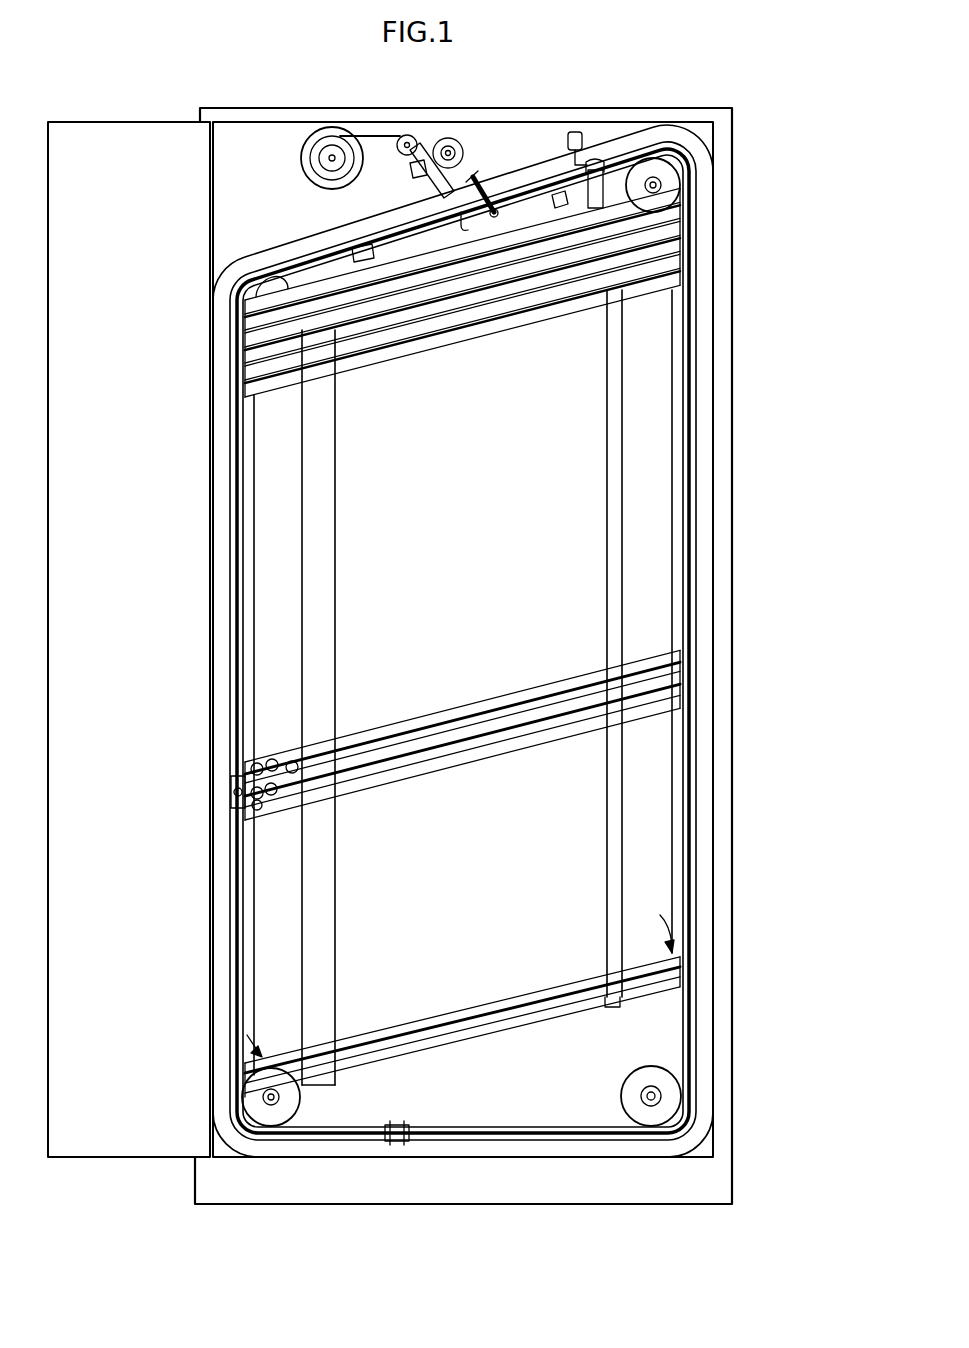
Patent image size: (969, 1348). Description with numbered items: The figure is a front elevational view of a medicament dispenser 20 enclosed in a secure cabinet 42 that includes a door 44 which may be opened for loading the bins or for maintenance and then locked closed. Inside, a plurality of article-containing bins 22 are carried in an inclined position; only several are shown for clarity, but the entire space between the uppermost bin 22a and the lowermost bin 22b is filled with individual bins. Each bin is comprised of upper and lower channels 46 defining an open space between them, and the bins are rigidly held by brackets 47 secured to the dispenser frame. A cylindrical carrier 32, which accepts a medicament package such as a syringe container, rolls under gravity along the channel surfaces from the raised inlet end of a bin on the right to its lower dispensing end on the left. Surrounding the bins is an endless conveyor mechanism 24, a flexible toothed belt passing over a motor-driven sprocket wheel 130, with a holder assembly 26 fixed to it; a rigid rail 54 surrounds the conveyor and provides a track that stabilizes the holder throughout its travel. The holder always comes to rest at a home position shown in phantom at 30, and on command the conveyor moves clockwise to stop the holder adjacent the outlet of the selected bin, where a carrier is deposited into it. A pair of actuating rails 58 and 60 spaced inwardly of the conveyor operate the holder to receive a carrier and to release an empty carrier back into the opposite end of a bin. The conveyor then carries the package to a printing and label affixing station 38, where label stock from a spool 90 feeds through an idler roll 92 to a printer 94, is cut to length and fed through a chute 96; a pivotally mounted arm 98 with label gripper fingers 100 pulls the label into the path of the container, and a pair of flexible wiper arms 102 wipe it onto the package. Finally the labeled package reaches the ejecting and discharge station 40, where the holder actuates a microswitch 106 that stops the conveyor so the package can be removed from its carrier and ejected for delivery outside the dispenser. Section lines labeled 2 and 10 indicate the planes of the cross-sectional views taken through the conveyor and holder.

The section line 2- 2 is at (243, 772).
The section line 10- 10 is at (530, 97).
The medicament dispenser 20 is at (752, 607).
The article-containing bins 22 is at (458, 346).
The uppermost bin 22a is at (534, 212).
The lowermost bin 22b is at (528, 1022).
The endless conveyor mechanism 24 is at (453, 1122).
The holder assembly 26 is at (233, 793).
The home position 30 is at (402, 1143).
The carrier 32 is at (292, 772).
The printing and label affixing station 38 is at (366, 178).
The ejecting and discharge station 40 is at (602, 130).
The cabinet 42 is at (735, 657).
The door 44 is at (100, 1140).
The upper and lower channels 46 is at (372, 732).
The brackets 47 is at (333, 575).
The rigid rail 54 is at (235, 516).
The actuating rail 58 is at (248, 527).
The actuating rail 60 is at (678, 428).
The spool of label stock 90 is at (320, 130).
The idler roll 92 is at (407, 134).
The printer 94 is at (435, 120).
The chute 96 is at (432, 186).
The pivotally mounted arm 98 is at (352, 252).
The label gripper fingers 100 is at (470, 220).
The wiper arms 102 is at (492, 195).
The microswitch 106 is at (572, 182).
The sprocket wheel 130 is at (635, 1075).